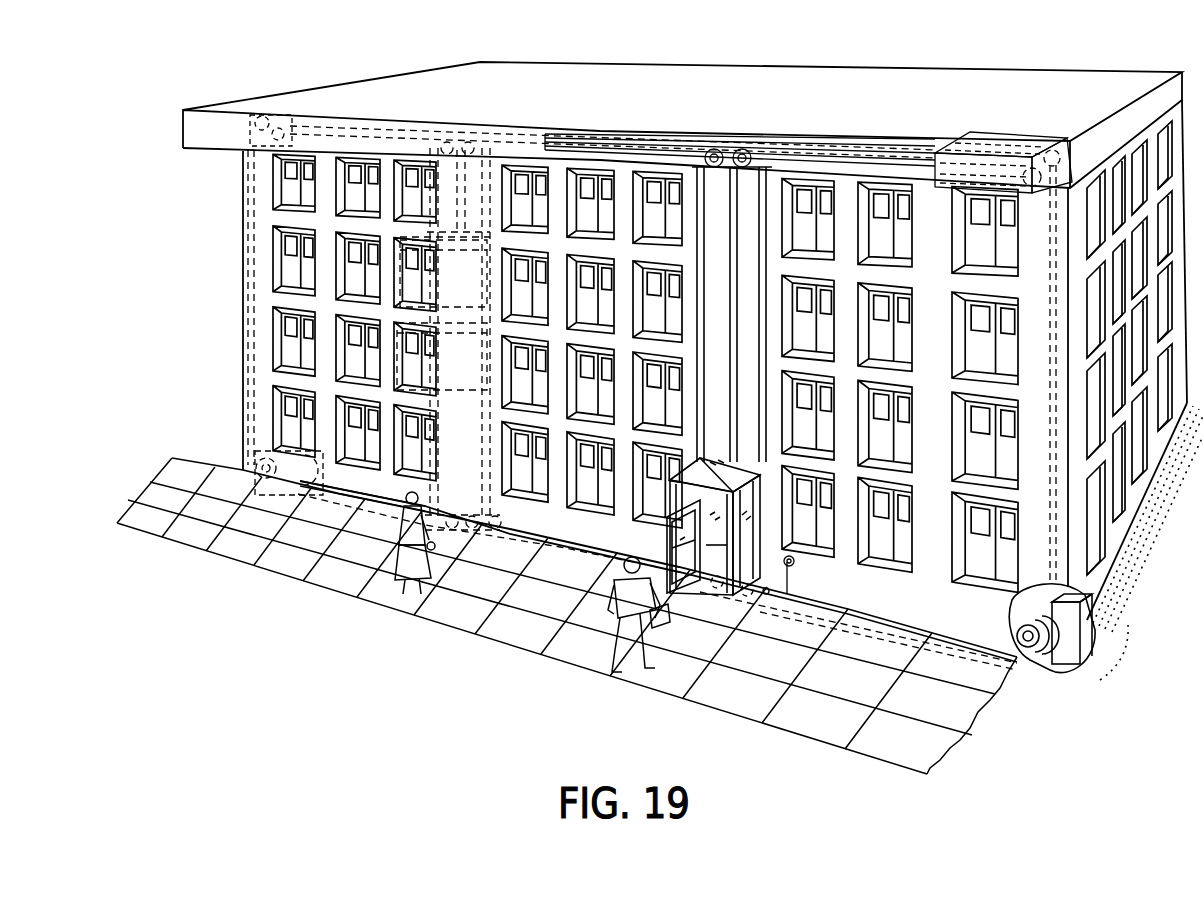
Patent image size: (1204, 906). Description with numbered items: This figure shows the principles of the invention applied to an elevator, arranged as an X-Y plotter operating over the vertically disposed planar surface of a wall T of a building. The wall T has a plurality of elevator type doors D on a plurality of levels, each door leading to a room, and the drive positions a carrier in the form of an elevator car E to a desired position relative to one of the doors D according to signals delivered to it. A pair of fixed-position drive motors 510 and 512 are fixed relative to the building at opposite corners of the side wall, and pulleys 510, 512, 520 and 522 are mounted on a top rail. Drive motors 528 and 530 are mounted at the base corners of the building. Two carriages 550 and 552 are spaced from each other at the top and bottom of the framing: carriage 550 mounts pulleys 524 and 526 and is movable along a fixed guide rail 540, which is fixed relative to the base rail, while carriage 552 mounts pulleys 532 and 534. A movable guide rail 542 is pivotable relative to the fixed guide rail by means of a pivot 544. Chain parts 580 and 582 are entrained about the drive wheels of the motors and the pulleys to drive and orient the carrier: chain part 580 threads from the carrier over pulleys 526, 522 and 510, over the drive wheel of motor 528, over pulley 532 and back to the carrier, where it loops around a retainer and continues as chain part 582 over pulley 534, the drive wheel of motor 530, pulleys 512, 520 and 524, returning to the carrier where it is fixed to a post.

The drive motor / pulley 510 is at (262, 116).
The drive motor / pulley 512 is at (1057, 163).
The pulley 520 is at (303, 120).
The pulley 522 is at (1030, 162).
The pulley 524 is at (733, 120).
The pulley 526 is at (745, 149).
The drive motor 528 is at (258, 465).
The drive motor 530 is at (1024, 650).
The pulley 532 is at (720, 575).
The pulley 534 is at (773, 599).
The fixed guide rail 540 is at (548, 548).
The movable guide rail 542 is at (692, 192).
The pivot 544 is at (792, 583).
The carriage 550 is at (790, 138).
The carriage 552 is at (796, 594).
The chain part 580 is at (247, 214).
The chain part 582 is at (1110, 608).
The wall T is at (943, 289).
The elevator type doors D is at (968, 344).
The elevator car E is at (750, 484).